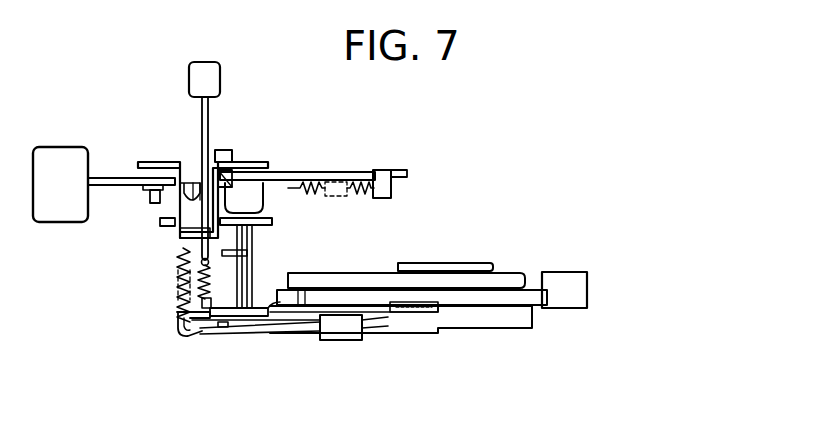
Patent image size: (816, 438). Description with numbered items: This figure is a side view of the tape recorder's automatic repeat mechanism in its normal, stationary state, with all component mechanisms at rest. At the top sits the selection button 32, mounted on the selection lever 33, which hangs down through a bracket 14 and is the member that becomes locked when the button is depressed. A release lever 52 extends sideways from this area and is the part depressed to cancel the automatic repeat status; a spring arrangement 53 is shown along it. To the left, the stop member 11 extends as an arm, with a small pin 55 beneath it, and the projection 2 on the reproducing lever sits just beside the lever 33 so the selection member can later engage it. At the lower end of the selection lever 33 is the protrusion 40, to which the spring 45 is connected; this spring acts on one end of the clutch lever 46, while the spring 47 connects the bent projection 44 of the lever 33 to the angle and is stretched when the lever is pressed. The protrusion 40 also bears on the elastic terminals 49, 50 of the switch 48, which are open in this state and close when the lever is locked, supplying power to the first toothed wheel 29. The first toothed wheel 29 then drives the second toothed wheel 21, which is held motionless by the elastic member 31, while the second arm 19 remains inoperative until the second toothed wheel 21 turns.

The projection 2 is at (262, 195).
The stop member 11 is at (143, 187).
The U-shaped bracket 14 is at (193, 181).
The second arm 19 is at (442, 318).
The second toothed wheel 21 is at (492, 292).
The first toothed wheel 29 is at (562, 283).
The elastic member 31 is at (460, 278).
The selection button 32 is at (220, 77).
The selection lever 33 is at (209, 110).
The protrusion 40 is at (188, 333).
The bent projection 44 is at (188, 318).
The spring 45 is at (189, 290).
The clutch lever 46 is at (212, 264).
The spring 47 is at (181, 248).
The switch 48 is at (338, 326).
The elastic terminal 49 is at (216, 330).
The elastic terminal 50 is at (250, 336).
The release lever 52 is at (330, 172).
The spring damper 53 is at (338, 196).
The pin 55 is at (156, 203).